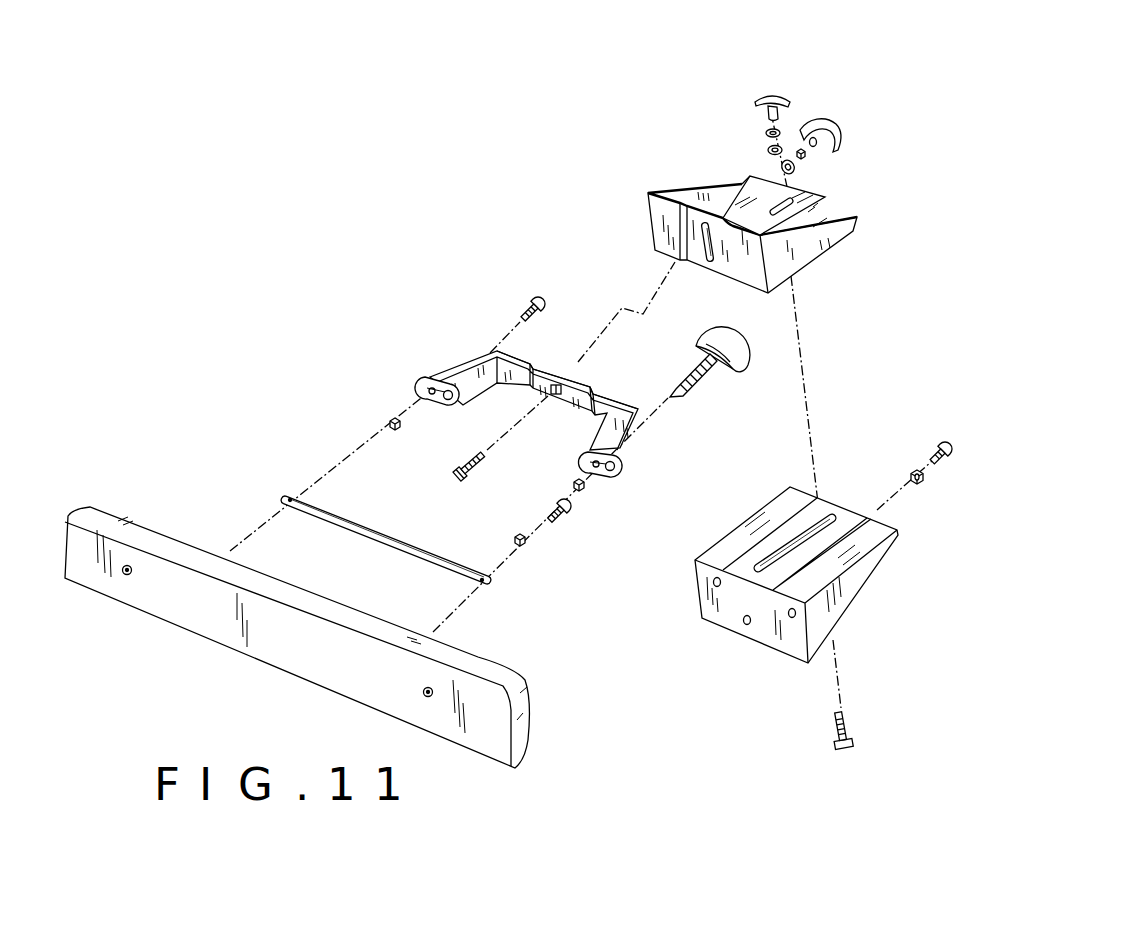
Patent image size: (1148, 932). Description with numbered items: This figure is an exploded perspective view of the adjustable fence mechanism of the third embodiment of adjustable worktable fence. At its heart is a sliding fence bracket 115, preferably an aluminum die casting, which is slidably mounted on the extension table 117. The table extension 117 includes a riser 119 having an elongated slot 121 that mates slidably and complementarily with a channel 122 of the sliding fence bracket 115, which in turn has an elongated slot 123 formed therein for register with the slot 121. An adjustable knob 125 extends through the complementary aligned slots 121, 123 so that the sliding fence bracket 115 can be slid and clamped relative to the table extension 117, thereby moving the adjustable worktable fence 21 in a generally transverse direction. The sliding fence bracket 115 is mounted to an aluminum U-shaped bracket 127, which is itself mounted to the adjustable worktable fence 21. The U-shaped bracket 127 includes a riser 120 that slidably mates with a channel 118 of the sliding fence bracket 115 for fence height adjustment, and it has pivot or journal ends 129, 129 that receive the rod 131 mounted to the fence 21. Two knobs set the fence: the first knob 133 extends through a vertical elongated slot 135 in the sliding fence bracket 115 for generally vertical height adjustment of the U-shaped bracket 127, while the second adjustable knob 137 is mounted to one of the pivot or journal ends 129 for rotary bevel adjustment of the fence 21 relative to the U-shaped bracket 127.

The adjustable worktable fence 21 is at (176, 588).
The sliding fence bracket 115 is at (793, 166).
The extension table 117 is at (857, 580).
The channel 118 is at (722, 290).
The riser 119 is at (845, 508).
The riser 120 is at (564, 365).
The elongated slot 121 is at (817, 523).
The channel 122 is at (830, 185).
The elongated slot 123 is at (777, 213).
The adjustable knob 125 is at (779, 92).
The U-shaped bracket 127 is at (540, 364).
The pivot or journal ends 129 is at (437, 378).
The rod 131 is at (343, 517).
The first knob 133 is at (820, 120).
The vertical elongated slot 135 is at (707, 258).
The second adjustable knob 137 is at (748, 340).